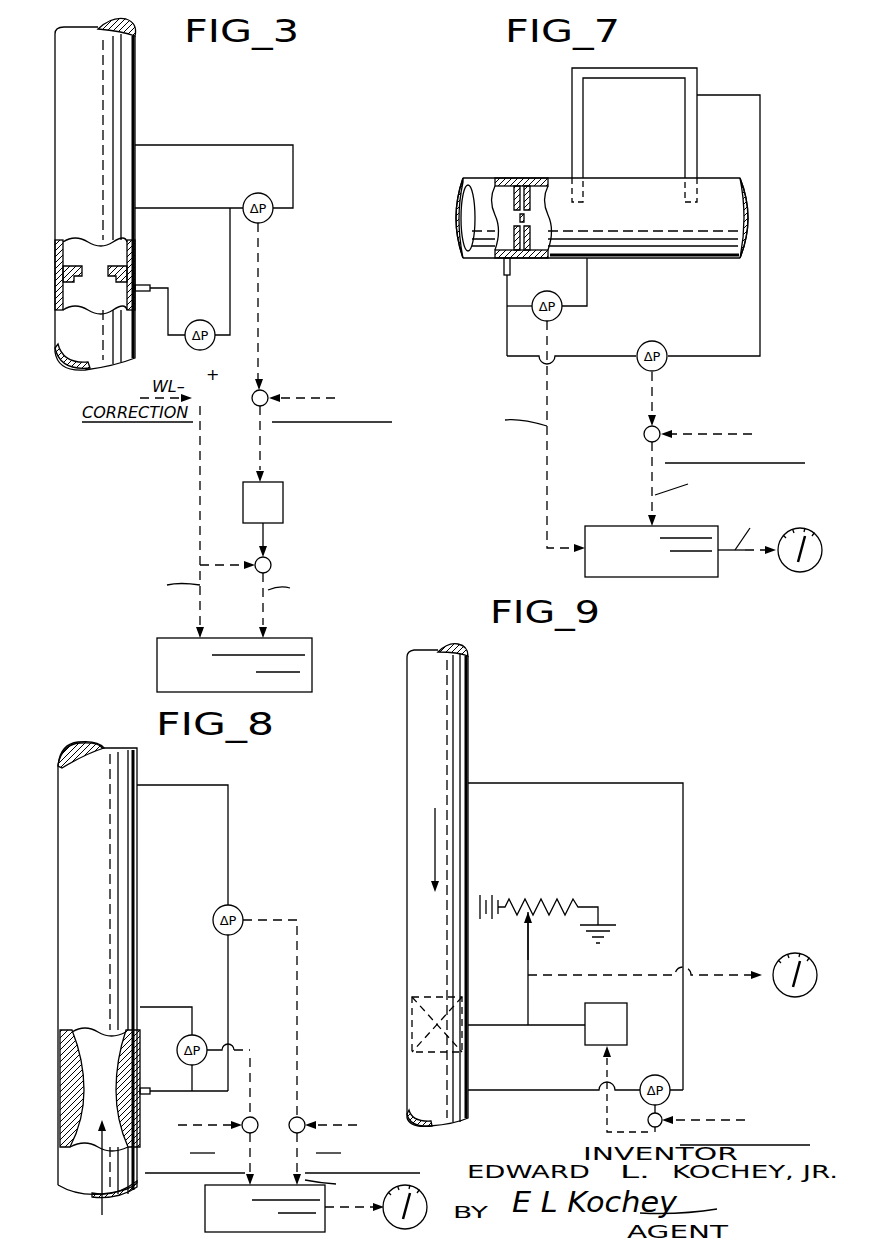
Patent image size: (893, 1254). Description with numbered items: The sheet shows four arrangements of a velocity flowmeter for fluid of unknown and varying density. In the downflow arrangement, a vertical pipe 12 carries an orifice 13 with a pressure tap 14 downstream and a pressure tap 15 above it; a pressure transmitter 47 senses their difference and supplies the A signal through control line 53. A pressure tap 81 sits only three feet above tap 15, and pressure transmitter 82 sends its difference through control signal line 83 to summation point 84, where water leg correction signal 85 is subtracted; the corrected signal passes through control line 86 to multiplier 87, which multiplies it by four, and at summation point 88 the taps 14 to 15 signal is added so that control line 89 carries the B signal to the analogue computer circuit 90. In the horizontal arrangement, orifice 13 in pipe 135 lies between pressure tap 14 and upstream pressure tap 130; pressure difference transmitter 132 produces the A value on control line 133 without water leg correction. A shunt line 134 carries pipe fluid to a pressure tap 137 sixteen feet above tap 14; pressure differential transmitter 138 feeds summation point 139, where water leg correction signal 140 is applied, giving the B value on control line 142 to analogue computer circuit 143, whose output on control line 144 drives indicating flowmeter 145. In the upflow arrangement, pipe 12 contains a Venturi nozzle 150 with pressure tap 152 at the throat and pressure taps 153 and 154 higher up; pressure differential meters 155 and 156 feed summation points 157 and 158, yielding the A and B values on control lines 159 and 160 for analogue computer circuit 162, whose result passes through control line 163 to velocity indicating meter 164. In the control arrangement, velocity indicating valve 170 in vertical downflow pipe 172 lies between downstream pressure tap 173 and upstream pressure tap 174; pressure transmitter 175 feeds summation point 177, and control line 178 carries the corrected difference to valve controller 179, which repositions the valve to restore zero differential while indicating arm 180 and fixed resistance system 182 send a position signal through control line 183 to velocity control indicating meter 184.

In FIG. 3, the vertical pipe 12 is at (65, 94).
In FIG. 8, the vertical pipe 12 is at (65, 809).
In FIG. 3, the orifice 13 is at (62, 262).
In FIG. 7, the orifice 13 is at (515, 180).
In FIG. 3, the pressure tap 14 is at (140, 287).
In FIG. 7, the pressure tap 14 is at (503, 270).
In FIG. 3, the pressure tap 15 is at (171, 208).
In FIG. 3, the pressure transmitter 47 is at (197, 320).
In FIG. 3, the control line 53 is at (200, 614).
In FIG. 3, the pressure tap 81 is at (188, 145).
In FIG. 3, the pressure transmitter 82 is at (273, 212).
In FIG. 3, the control signal line 83 is at (260, 292).
In FIG. 3, the summation point 84 is at (264, 392).
In FIG. 3, the water leg correction signal 85 is at (318, 396).
In FIG. 3, the control line 86 is at (262, 472).
In FIG. 3, the multiplier 87 is at (283, 505).
In FIG. 3, the summation point 88 is at (272, 562).
In FIG. 3, the control line 89 is at (266, 618).
In FIG. 3, the analogue computer circuit 90 is at (305, 645).
In FIG. 7, the pressure tap 130 is at (590, 285).
In FIG. 7, the pressure difference transmitter 132 is at (562, 312).
In FIG. 7, the control line 133 is at (547, 484).
In FIG. 7, the shunt line 134 is at (685, 68).
In FIG. 7, the pipe 135 is at (640, 178).
In FIG. 7, the pressure tap 137 is at (722, 95).
In FIG. 7, the pressure differential transmitter 138 is at (660, 342).
In FIG. 7, the summation point 139 is at (644, 436).
In FIG. 7, the water leg correction signal 140 is at (725, 440).
In FIG. 7, the control line 142 is at (652, 488).
In FIG. 7, the analogue computer circuit 143 is at (650, 577).
In FIG. 7, the control line 144 is at (738, 558).
In FIG. 7, the indicating flowmeter 145 is at (820, 502).
In FIG. 8, the Venturi nozzle 150 is at (72, 1104).
In FIG. 8, the pressure tap 152 is at (150, 1095).
In FIG. 8, the pressure tap 153 is at (165, 1006).
In FIG. 8, the pressure tap 154 is at (178, 785).
In FIG. 8, the pressure differential meter 155 is at (186, 1045).
In FIG. 8, the pressure differential meter 156 is at (240, 908).
In FIG. 8, the summation point 157 is at (258, 1105).
In FIG. 8, the summation point 158 is at (308, 1108).
In FIG. 8, the control line 159 is at (254, 1133).
In FIG. 8, the control line 160 is at (292, 1136).
In FIG. 8, the analogue computer circuit 162 is at (205, 1228).
In FIG. 8, the control line 163 is at (348, 1215).
In FIG. 8, the velocity indicating meter 164 is at (420, 1195).
In FIG. 9, the velocity indicating valve 170 is at (412, 1004).
In FIG. 9, the vertical downflow pipe 172 is at (410, 793).
In FIG. 9, the downstream pressure tap 173 is at (495, 1093).
In FIG. 9, the upstream pressure tap 174 is at (568, 766).
In FIG. 9, the pressure transmitter 175 is at (668, 1063).
In FIG. 9, the summation point 177 is at (648, 1121).
In FIG. 9, the control line 178 is at (605, 1132).
In FIG. 9, the valve controller 179 is at (627, 1025).
In FIG. 9, the indicating arm 180 is at (528, 1007).
In FIG. 9, the fixed resistance system 182 is at (570, 873).
In FIG. 9, the control line 183 is at (598, 956).
In FIG. 9, the velocity control indicating meter 184 is at (818, 950).